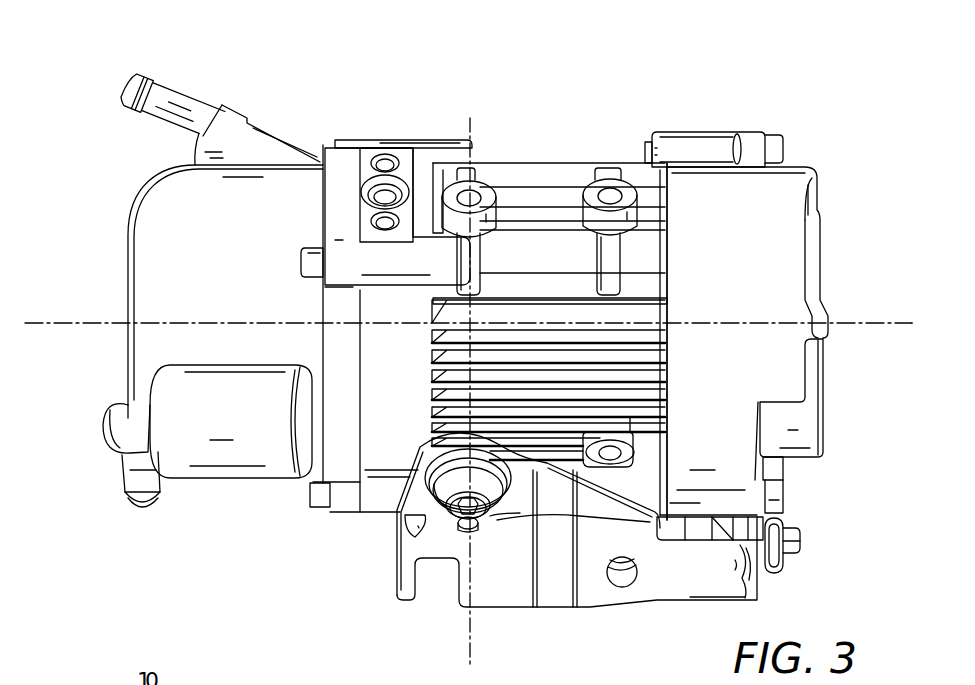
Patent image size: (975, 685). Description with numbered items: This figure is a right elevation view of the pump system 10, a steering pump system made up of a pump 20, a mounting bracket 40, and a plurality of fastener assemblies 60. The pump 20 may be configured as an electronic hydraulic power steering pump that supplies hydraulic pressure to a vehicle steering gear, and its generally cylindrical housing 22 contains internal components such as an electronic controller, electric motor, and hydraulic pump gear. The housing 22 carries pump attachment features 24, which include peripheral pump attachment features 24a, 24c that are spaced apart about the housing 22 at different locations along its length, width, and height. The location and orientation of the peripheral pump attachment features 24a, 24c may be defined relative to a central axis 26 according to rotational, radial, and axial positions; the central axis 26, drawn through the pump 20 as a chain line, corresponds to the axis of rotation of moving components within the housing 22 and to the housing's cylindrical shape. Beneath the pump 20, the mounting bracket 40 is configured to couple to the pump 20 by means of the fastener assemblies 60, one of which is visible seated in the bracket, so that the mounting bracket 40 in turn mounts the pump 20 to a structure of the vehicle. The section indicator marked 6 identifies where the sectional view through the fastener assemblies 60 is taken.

The pump system 10 is at (100, 115).
The pump 20 is at (217, 278).
The housing 22 is at (220, 119).
The pump attachment features 24 is at (484, 366).
The peripheral pump attachment features 24a is at (466, 194).
The peripheral pump attachment features 24c is at (610, 192).
The central axis 26 is at (886, 323).
The mounting bracket 40 is at (412, 553).
The fastener assemblies 60 is at (508, 523).
The section line 6- 6 is at (470, 118).